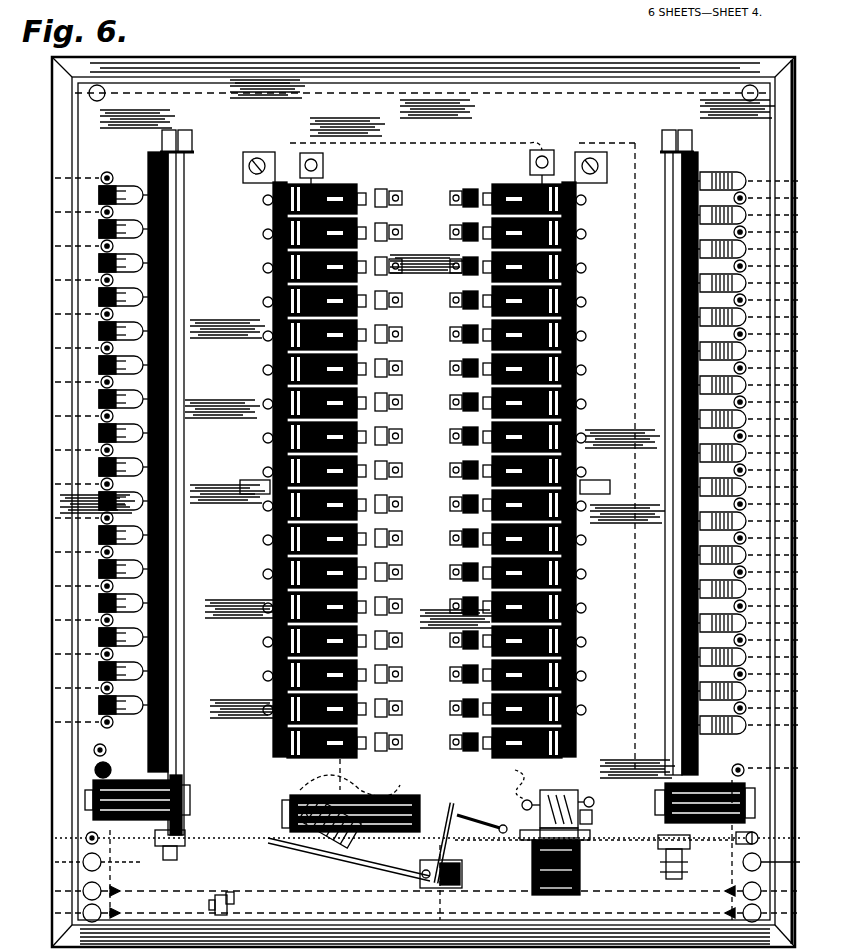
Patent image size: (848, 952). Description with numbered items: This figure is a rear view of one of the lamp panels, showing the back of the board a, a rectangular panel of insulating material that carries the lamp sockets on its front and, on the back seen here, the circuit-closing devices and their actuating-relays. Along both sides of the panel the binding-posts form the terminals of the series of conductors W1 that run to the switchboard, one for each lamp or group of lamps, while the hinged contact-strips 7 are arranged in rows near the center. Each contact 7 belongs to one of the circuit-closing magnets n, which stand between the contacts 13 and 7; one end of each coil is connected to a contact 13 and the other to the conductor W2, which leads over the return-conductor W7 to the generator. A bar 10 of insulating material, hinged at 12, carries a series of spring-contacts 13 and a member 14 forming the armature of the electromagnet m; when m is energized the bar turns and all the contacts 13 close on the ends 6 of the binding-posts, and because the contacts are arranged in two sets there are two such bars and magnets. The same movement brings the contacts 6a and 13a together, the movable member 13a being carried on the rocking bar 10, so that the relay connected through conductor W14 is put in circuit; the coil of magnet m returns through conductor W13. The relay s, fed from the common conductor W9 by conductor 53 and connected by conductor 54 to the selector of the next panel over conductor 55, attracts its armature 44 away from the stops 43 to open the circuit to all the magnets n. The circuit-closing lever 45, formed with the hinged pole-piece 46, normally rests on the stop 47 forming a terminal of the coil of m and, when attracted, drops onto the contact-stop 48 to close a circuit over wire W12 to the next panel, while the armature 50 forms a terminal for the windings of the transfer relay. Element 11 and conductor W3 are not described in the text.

The board a is at (765, 125).
The ends of the binding-posts 6 is at (756, 438).
The contacts 7 is at (426, 467).
The bar 10 is at (184, 545).
The magnet 11 is at (351, 787).
The hinge 12 is at (180, 155).
The spring-contacts 13 is at (749, 465).
The armature member 14 is at (190, 803).
The stops 43 is at (610, 790).
The circuit-closing armature 44 is at (582, 818).
The circuit-closing lever 45 is at (380, 868).
The hinged pole-piece 46 is at (471, 843).
The stop 47 is at (310, 815).
The contact-stop 48 is at (230, 905).
The armature 50 is at (396, 730).
The conductor 53 is at (533, 843).
The conductor 54 is at (421, 852).
The conductor 55 is at (582, 821).
The contact for the relay u 6a is at (94, 750).
The movable contact member 13a is at (96, 771).
The electromagnet m is at (437, 844).
The circuit-closing magnets n is at (252, 455).
The relay s is at (568, 867).
The conductors W1 is at (420, 450).
The conductor W2 is at (475, 449).
The wire W3 is at (786, 768).
The return-conductor W7 is at (422, 89).
The common conductor W9 is at (421, 889).
The wire W12 is at (422, 911).
The conductor W13 is at (376, 829).
The conductor W14 is at (420, 837).